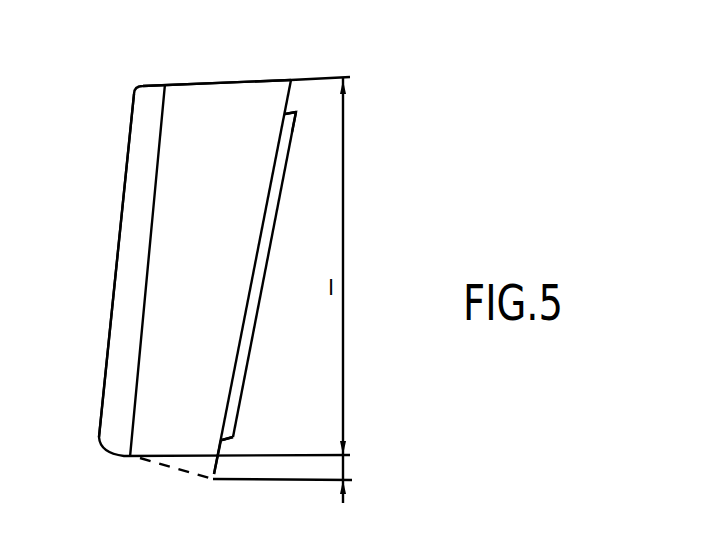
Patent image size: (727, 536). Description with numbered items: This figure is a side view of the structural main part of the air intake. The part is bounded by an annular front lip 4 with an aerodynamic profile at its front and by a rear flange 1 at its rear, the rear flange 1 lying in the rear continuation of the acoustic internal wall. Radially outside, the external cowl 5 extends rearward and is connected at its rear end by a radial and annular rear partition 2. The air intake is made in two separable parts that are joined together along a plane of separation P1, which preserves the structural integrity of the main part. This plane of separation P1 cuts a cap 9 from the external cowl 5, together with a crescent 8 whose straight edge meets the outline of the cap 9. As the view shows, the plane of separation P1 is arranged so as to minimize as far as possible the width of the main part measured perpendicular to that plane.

The rear flange 1 is at (273, 235).
The rear partition 2 is at (292, 93).
The front lip 4 is at (135, 197).
The external cowl 5 is at (195, 90).
The crescent 8 is at (217, 470).
The cap 9 is at (168, 470).
The plane of separation P1 is at (297, 455).